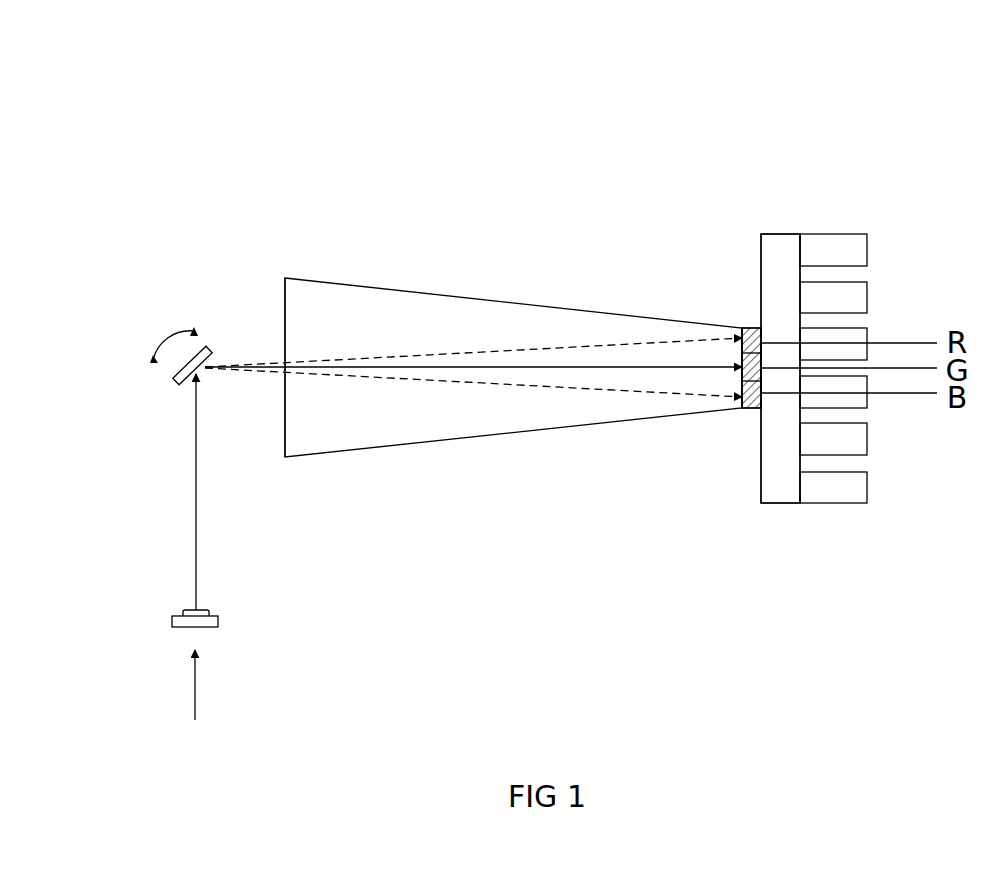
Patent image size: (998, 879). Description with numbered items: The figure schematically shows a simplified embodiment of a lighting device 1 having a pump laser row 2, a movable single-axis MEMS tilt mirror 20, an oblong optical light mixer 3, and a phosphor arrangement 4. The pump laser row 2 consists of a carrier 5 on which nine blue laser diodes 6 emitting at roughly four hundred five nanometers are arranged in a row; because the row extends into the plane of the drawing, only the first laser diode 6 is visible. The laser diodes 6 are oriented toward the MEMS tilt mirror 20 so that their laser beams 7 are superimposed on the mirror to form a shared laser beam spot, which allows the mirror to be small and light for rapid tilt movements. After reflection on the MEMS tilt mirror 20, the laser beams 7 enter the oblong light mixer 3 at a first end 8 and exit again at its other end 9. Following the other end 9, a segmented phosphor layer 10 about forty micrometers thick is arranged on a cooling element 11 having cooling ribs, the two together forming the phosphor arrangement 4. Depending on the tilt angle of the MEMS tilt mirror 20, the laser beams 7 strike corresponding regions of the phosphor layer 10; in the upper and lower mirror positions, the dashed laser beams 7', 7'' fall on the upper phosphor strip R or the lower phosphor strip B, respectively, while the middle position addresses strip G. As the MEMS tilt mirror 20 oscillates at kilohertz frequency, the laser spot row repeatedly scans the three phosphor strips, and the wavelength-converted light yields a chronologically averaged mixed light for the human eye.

The lighting device 1 is at (658, 131).
The pump laser row 2 is at (194, 706).
The oblong optical light mixer 3 is at (373, 284).
The phosphor arrangement 4 is at (744, 241).
The carrier 5 is at (172, 620).
The blue laser diode 6 is at (208, 613).
The laser beam 7 is at (522, 488).
The dashed laser beam 7' is at (571, 289).
The dashed laser beam 7'' is at (571, 457).
The first end 8 is at (285, 312).
The other end 9 is at (723, 431).
The segmented phosphor layer 10 is at (750, 412).
The cooling element 11 is at (782, 487).
The MEMS tilt mirror 20 is at (173, 376).